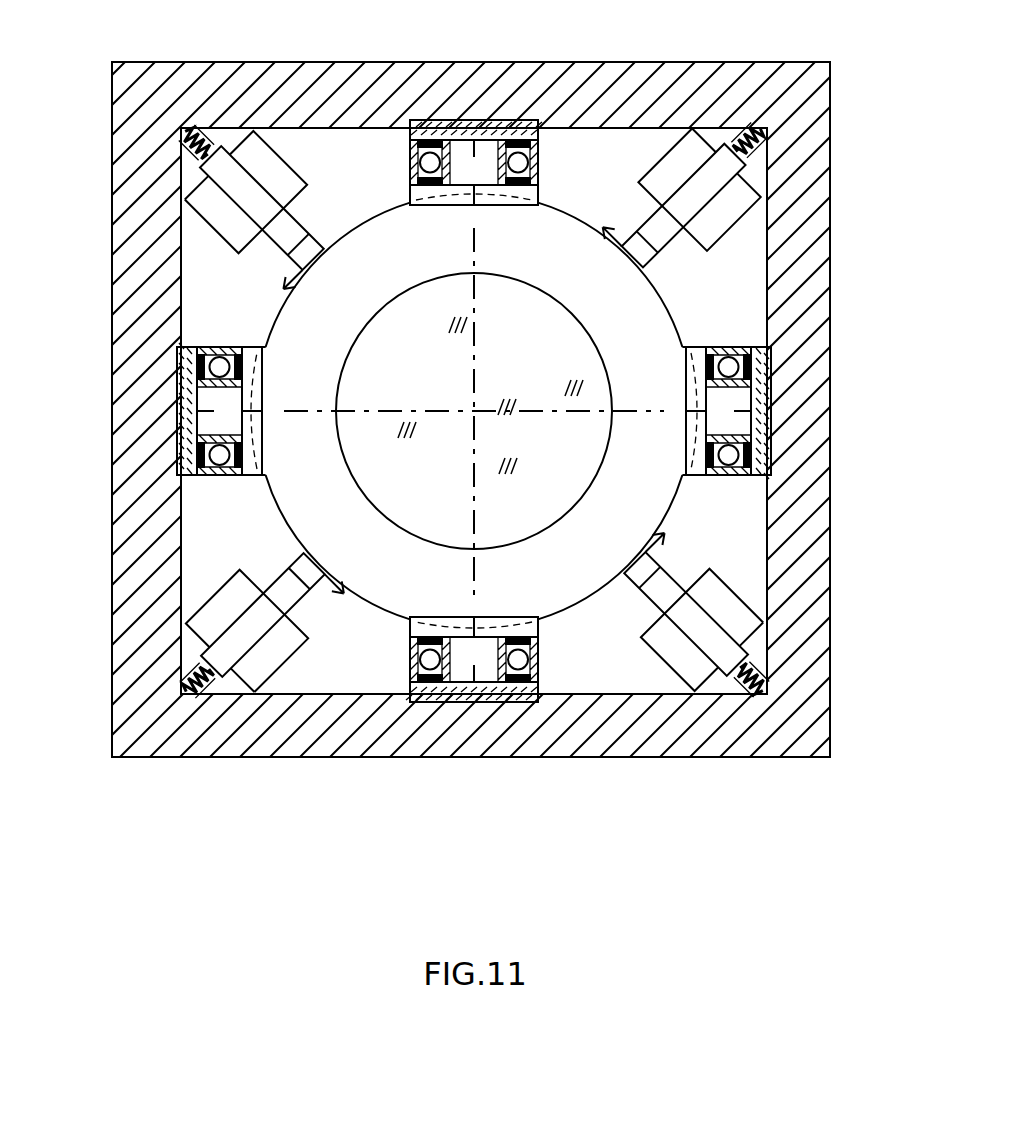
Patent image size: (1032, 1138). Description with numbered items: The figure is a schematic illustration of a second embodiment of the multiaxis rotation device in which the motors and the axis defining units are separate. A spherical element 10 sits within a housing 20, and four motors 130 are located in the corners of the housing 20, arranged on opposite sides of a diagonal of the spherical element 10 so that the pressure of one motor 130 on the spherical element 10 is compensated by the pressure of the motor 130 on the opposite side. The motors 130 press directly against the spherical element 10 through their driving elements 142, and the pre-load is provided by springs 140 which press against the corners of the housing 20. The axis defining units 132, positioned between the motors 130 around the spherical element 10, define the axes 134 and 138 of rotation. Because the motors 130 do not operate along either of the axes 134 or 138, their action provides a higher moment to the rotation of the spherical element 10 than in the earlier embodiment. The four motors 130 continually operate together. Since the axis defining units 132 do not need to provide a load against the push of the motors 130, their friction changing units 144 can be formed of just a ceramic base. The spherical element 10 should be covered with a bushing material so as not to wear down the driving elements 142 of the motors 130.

The spherical element 10 is at (672, 304).
The housing 20 is at (831, 178).
The motor 130 is at (326, 184).
The axis defining unit 132 is at (540, 153).
The axis 134 is at (478, 236).
The axis 138 is at (633, 407).
The spring 140 is at (740, 138).
The driving element 142 is at (322, 264).
The friction changing unit 144 is at (500, 121).